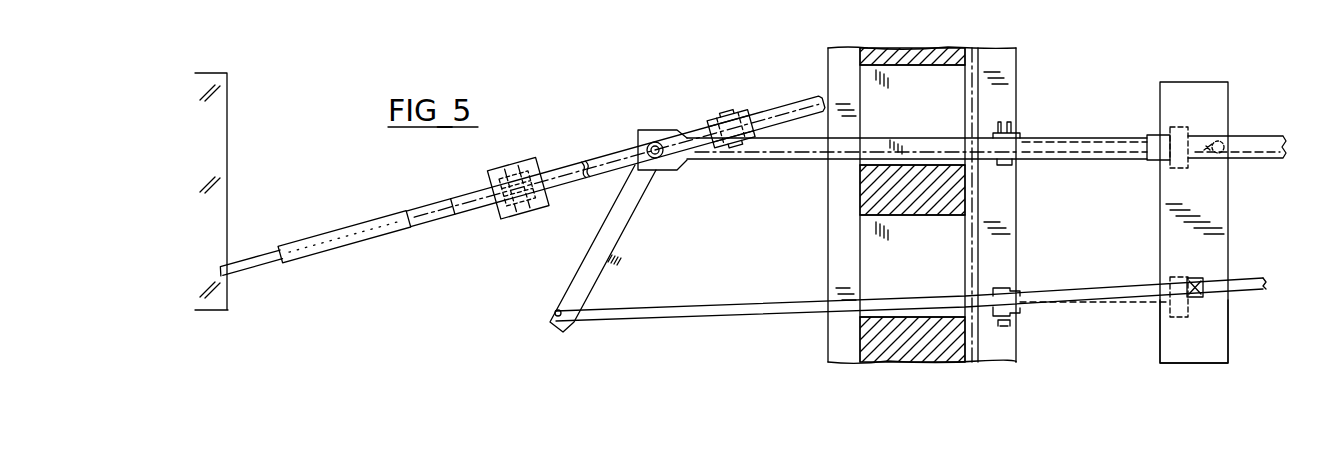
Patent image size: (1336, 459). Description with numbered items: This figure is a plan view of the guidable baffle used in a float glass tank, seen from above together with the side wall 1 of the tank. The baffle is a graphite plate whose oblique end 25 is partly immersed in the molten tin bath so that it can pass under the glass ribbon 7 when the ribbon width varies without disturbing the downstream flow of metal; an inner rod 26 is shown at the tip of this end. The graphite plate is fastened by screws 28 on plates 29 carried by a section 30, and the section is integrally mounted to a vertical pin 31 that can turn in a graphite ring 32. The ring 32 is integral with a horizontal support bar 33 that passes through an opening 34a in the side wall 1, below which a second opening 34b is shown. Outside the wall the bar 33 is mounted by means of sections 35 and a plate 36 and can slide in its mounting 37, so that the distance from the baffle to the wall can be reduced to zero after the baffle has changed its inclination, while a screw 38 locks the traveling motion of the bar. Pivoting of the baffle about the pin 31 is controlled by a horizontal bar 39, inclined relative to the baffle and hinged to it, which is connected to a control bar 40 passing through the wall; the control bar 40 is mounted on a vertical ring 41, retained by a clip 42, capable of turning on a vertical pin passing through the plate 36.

The side wall 1 is at (860, 204).
The glass ribbon 7 is at (228, 153).
The oblique end 25 is at (370, 223).
The inner rod 26 is at (273, 268).
The screws 28 is at (526, 219).
The plates 29 is at (516, 166).
The section 30 is at (467, 194).
The vertical pin 31 is at (656, 141).
The graphite ring 32 is at (637, 130).
The horizontal support bar 33 is at (769, 160).
The opening 34a is at (936, 119).
The lower guide opening 34b is at (937, 276).
The sections 35 is at (1170, 172).
The plate 36 is at (1180, 92).
The mounting 37 is at (1244, 138).
The screw 38 is at (1212, 141).
The horizontal bar 39 is at (624, 221).
The control bar 40 is at (643, 318).
The vertical ring 41 is at (1194, 331).
The clip 42 is at (1197, 279).